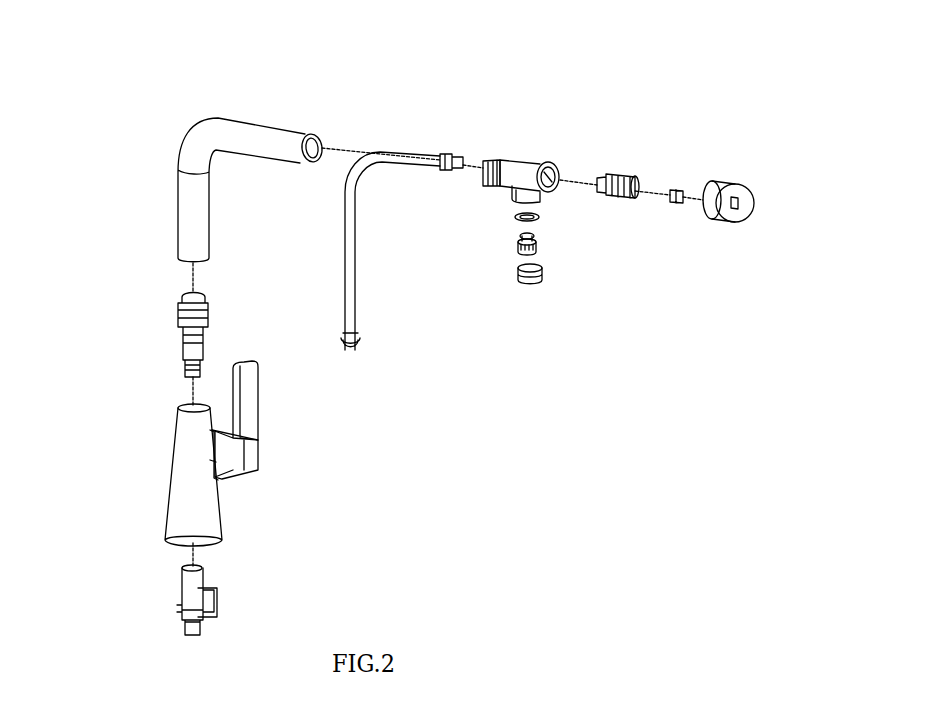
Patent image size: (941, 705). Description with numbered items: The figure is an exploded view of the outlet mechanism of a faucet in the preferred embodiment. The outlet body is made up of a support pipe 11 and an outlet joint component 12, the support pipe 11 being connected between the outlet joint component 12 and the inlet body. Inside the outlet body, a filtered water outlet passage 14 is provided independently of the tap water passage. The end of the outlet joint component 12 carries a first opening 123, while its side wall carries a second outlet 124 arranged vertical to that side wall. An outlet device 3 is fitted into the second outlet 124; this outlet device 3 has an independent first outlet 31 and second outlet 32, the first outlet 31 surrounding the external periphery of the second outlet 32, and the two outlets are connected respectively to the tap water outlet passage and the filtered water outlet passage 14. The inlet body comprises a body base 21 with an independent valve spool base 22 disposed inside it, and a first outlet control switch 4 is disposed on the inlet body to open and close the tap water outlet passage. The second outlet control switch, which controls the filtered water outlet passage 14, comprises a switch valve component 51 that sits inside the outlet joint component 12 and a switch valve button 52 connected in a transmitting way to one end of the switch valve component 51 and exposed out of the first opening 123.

The support pipe 11 is at (193, 211).
The outlet joint component 12 is at (505, 135).
The first opening 123 is at (560, 165).
The second outlet 124 is at (540, 198).
The filtered water outlet passage 14 is at (388, 157).
The body base 21 is at (193, 490).
The valve spool base 22 is at (192, 605).
The outlet device 3 is at (571, 280).
The first outlet 31 is at (522, 243).
The second outlet 32 is at (535, 242).
The first outlet control switch 4 is at (252, 447).
The switch valve component 51 is at (617, 177).
The switch valve button 52 is at (724, 190).